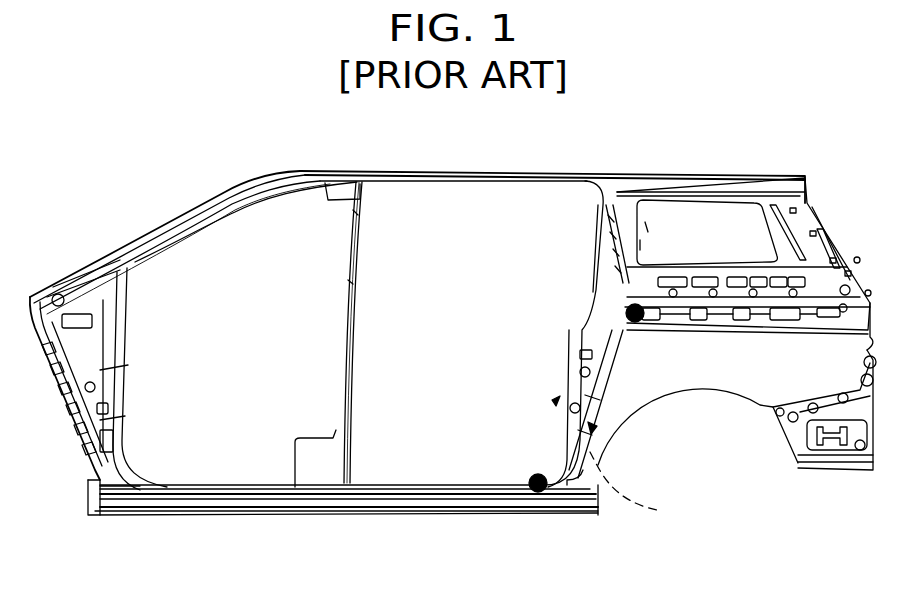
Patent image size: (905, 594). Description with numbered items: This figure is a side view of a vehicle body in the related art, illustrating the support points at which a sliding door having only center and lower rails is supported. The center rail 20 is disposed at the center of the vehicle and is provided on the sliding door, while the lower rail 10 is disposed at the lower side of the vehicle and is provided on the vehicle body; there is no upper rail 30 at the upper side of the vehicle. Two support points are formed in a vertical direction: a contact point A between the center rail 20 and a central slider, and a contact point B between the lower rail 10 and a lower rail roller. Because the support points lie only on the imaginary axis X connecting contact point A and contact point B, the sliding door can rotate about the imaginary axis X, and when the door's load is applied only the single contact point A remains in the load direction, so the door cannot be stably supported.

The lower rail 10 is at (428, 486).
The center rail 20 is at (722, 305).
The upper rail 30 is at (441, 170).
The contact point A is at (627, 308).
The contact point B is at (538, 492).
The imaginary axis X is at (632, 488).